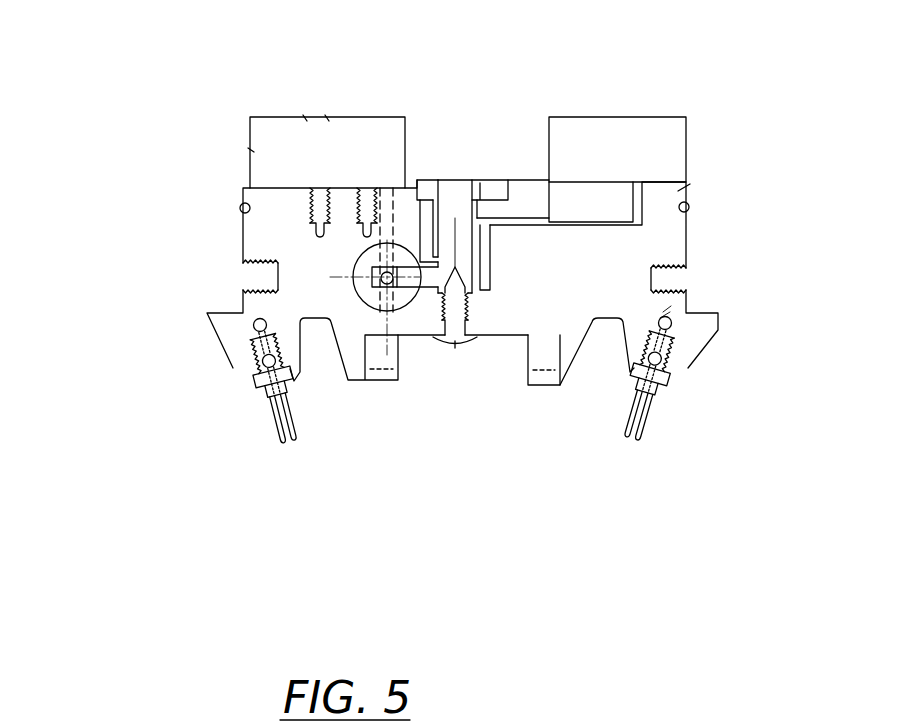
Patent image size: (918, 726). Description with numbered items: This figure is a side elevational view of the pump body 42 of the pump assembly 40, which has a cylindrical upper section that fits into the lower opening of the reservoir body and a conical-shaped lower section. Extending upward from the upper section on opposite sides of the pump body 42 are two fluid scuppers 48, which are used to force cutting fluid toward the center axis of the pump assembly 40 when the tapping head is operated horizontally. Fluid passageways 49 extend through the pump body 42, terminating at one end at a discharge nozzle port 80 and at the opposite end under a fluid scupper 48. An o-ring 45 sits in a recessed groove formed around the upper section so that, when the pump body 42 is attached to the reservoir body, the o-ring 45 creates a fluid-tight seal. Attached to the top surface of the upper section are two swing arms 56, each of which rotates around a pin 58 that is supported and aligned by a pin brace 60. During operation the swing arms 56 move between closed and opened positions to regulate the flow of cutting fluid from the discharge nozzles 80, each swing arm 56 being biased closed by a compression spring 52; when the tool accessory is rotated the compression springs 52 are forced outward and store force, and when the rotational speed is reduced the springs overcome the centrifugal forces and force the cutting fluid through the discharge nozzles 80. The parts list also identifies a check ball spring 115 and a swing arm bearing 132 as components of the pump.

The pump assembly 40 is at (112, 65).
The pump body 42 is at (241, 242).
The o-ring 45 is at (240, 204).
The fluid scupper 48 is at (292, 117).
The fluid passageway 49 is at (255, 326).
The compression spring 52 is at (256, 337).
The swing arm 56 is at (560, 181).
The pin 58 is at (453, 176).
The pin brace 60 is at (424, 176).
The discharge nozzle 80 is at (676, 368).
The check ball spring 115 is at (674, 333).
The swing arm bearing 132 is at (479, 300).